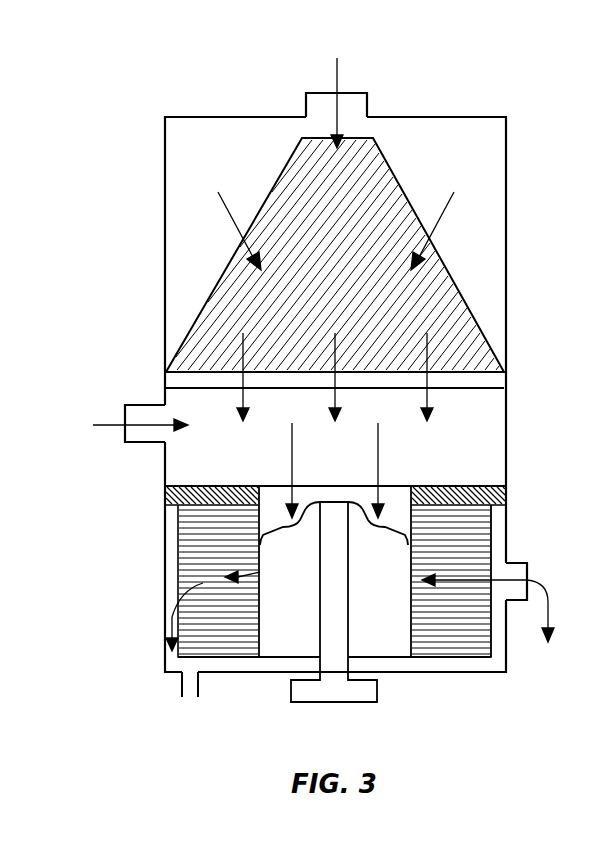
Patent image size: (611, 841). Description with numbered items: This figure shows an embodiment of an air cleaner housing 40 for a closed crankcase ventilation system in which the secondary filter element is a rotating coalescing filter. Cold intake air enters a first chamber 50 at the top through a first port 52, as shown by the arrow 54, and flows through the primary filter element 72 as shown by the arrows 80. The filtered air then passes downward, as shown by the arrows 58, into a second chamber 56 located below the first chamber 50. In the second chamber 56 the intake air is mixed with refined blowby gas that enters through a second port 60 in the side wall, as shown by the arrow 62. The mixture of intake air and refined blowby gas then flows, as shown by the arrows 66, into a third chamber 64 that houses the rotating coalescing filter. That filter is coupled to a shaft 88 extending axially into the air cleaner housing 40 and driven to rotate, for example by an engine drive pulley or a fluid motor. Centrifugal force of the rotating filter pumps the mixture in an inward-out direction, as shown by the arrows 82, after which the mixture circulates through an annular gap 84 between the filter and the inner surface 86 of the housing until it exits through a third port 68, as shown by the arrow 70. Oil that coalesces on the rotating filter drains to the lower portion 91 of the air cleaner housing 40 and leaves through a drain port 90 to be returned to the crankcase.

The air cleaner housing 40 is at (164, 153).
The first chamber 50 is at (233, 138).
The first port 52 is at (368, 108).
The arrow 54 is at (340, 73).
The primary filter element 72 is at (375, 200).
The arrows 80 is at (230, 217).
The arrow 58 is at (243, 355).
The second chamber 56 is at (485, 410).
The arrow 62 is at (113, 423).
The second port 60 is at (150, 445).
The arrows 66 is at (292, 468).
The inner surface 86 is at (495, 532).
The third port 68 is at (515, 560).
The arrow 70 is at (552, 605).
The annular gap 84 is at (168, 583).
The arrows 82 is at (290, 550).
The shaft 88 is at (332, 632).
The third chamber 64 is at (388, 640).
The lower portion 91 is at (442, 668).
The drain port 90 is at (176, 685).